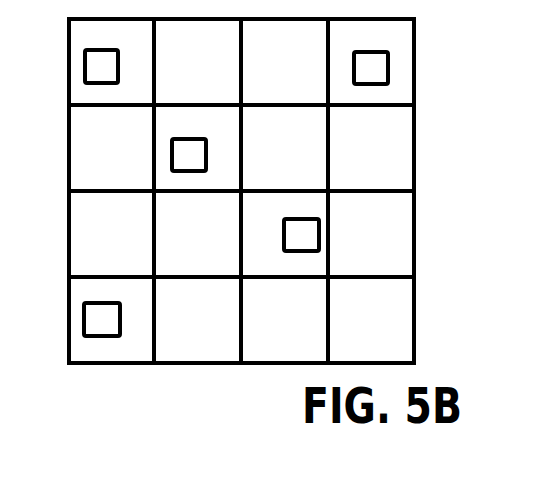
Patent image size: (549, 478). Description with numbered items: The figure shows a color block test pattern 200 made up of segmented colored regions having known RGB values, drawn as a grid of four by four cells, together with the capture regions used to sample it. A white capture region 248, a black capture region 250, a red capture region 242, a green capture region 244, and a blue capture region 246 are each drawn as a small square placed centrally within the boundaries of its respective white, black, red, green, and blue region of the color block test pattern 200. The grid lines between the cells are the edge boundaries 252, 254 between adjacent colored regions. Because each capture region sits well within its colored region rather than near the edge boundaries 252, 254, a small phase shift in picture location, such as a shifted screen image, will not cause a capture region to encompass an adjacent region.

The color block test pattern 200 is at (225, 386).
The red capture region 242 is at (77, 79).
The green capture region 244 is at (180, 181).
The blue capture region 246 is at (310, 262).
The white capture region 248 is at (381, 93).
The black capture region 250 is at (77, 332).
The edge boundary 252 is at (163, 78).
The edge boundary 254 is at (113, 115).